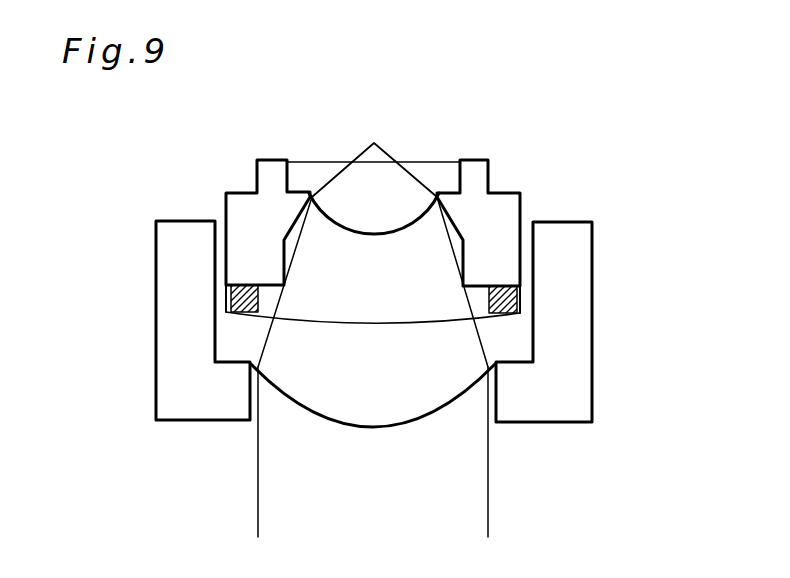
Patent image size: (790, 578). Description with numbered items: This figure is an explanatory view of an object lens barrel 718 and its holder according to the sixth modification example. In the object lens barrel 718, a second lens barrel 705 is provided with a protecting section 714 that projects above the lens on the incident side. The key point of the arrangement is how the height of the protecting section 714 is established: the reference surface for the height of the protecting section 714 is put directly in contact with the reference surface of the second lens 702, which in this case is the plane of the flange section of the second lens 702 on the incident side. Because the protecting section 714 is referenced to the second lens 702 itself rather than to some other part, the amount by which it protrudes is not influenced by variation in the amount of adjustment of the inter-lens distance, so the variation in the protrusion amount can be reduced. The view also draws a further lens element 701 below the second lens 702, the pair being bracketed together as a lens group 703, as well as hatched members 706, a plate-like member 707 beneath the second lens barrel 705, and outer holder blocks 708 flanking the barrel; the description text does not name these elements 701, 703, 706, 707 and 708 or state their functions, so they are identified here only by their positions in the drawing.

The first lens 701 is at (333, 393).
The second lens 702 is at (382, 214).
The lens group 703 is at (473, 498).
The second lens barrel 705 is at (504, 213).
The elastic member 706 is at (277, 278).
The holding plate 707 is at (517, 297).
The frame member 708 is at (568, 335).
The protecting section 714 is at (477, 170).
The object lens barrel 718 is at (515, 452).